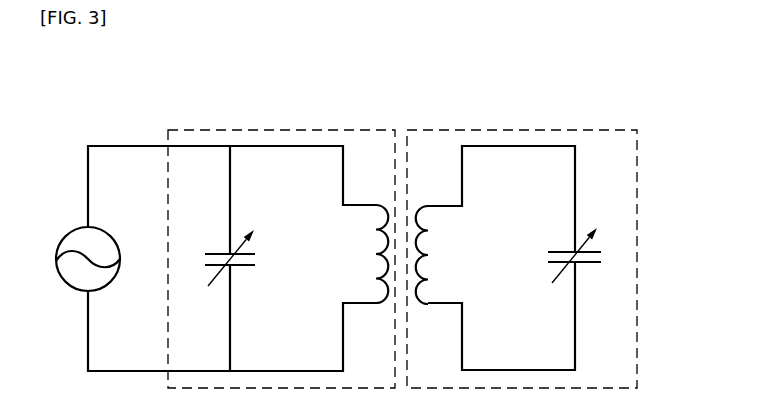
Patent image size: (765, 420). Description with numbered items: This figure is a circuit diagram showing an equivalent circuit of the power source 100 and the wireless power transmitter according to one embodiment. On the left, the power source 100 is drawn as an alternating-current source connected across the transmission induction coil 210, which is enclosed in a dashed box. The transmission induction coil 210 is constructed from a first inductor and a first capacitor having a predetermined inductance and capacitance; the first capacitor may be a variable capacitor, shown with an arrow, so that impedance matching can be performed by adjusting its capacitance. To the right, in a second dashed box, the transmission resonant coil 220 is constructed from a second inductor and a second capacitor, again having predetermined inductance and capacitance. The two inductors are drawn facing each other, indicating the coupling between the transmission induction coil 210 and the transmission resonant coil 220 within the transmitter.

The power source 100 is at (68, 235).
The transmission induction coil 210 is at (310, 130).
The transmission resonant coil 220 is at (466, 130).